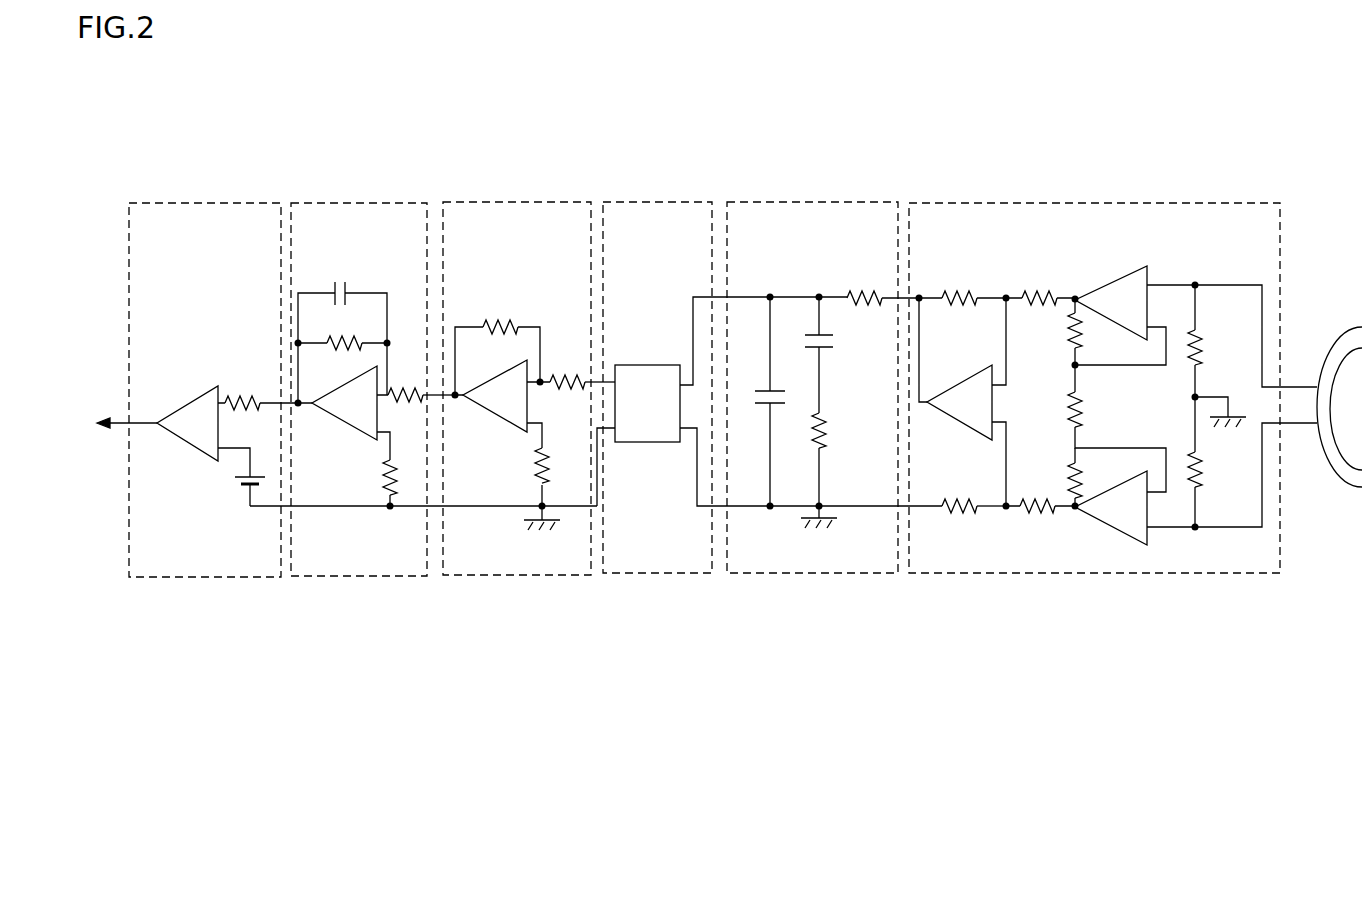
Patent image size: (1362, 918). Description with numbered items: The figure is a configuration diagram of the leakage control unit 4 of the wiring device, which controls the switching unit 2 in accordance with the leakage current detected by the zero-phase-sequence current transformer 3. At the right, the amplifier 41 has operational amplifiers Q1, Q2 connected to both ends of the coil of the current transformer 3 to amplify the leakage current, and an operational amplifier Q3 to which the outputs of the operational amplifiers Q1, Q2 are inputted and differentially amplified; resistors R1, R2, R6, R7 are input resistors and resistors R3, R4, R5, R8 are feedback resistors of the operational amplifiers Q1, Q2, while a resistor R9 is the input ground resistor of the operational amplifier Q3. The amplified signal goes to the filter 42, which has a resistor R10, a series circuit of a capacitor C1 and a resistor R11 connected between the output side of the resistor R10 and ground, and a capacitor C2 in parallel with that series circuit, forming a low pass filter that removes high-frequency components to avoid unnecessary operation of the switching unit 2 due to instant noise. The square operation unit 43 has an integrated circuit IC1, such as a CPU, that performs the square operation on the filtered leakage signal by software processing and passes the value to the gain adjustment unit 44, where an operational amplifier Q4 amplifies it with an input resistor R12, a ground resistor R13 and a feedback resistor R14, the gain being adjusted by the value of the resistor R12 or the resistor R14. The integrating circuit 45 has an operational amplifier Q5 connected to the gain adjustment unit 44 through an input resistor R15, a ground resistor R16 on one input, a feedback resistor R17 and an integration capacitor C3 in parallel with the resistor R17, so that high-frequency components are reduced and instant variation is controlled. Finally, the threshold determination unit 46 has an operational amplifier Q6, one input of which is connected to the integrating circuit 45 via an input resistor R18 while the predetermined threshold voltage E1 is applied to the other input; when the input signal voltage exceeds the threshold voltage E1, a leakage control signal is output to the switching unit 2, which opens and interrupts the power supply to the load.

The switching unit 2 is at (85, 401).
The zero-phase-sequence current transformer 3 is at (1345, 330).
The leakage control unit 4 is at (723, 300).
The amplifier 41 is at (977, 202).
The filter 42 is at (865, 202).
The square operation unit 43 is at (680, 202).
The gain adjustment unit 44 is at (552, 202).
The integrating circuit 45 is at (387, 202).
The threshold determination unit 46 is at (213, 203).
The operational amplifier Q1 is at (1112, 285).
The operational amplifier Q2 is at (1102, 525).
The operational amplifier Q3 is at (962, 422).
The operational amplifier Q4 is at (497, 422).
The operational amplifier Q5 is at (343, 423).
The operational amplifier Q6 is at (190, 403).
The input resistor R1 is at (1217, 356).
The input resistor R2 is at (1210, 462).
The feed back resistor R3 is at (1056, 332).
The feed back resistor R4 is at (1056, 477).
The feed back resistor R5 is at (1117, 428).
The input resistor R6 is at (1040, 284).
The input resistor R7 is at (1040, 522).
The feed back resistor R8 is at (962, 283).
The input ground resistor R9 is at (974, 524).
The resistor for the filter R10 is at (883, 284).
The resistor R11 is at (838, 470).
The input resistor R12 is at (580, 394).
The ground resistor R13 is at (522, 489).
The feed back resistor R14 is at (497, 342).
The input resistor R15 is at (421, 405).
The ground resistor R16 is at (367, 483).
The feed back resistor R17 is at (342, 332).
The input resistor R18 is at (258, 393).
The capacitor C1 is at (836, 355).
The capacitor C2 is at (761, 401).
The integration capacitor C3 is at (342, 328).
The threshold voltage E1 is at (237, 482).
The integrated circuit IC1 is at (645, 443).